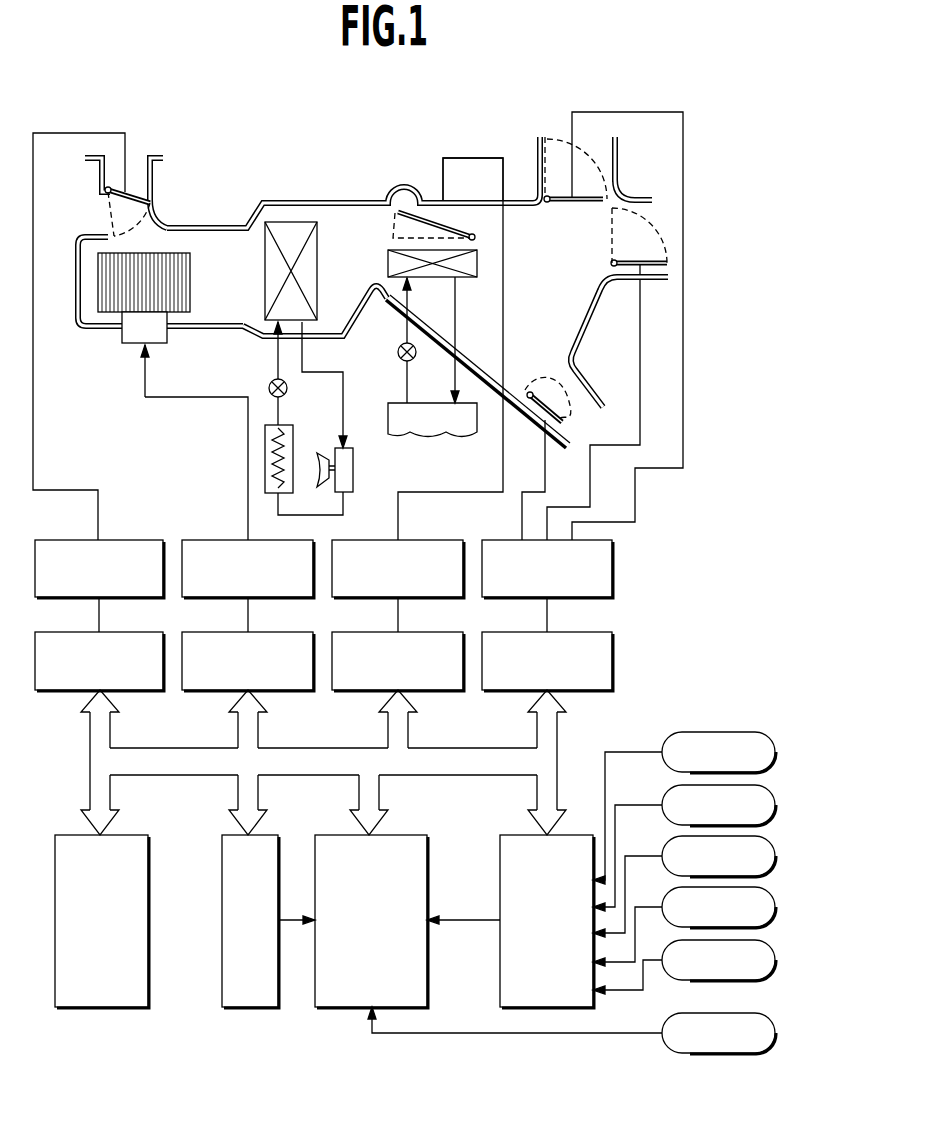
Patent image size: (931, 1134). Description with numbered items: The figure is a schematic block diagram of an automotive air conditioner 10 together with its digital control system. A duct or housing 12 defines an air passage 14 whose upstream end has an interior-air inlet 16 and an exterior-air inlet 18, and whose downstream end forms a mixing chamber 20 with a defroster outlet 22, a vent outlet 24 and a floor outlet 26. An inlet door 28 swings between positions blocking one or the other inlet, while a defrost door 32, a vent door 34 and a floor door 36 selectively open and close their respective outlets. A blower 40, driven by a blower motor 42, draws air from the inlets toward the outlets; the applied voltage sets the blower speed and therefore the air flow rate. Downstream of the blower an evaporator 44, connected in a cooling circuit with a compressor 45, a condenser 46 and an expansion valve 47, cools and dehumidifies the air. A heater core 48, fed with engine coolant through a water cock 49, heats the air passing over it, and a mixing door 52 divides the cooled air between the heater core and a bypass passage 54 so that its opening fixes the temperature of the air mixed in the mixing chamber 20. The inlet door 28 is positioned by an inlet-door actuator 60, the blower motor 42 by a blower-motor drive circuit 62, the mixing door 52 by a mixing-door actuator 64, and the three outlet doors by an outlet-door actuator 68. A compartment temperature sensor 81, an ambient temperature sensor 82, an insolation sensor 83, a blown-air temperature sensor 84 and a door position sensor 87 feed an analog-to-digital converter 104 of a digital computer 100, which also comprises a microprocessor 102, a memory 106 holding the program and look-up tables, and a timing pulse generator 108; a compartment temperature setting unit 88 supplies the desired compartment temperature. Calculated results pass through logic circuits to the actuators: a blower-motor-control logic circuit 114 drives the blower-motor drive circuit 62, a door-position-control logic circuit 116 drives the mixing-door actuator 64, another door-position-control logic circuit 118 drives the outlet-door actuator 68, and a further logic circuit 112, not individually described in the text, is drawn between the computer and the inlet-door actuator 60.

The air conditioner 10 is at (379, 155).
The duct or housing 12 is at (337, 199).
The air passage 14 is at (243, 294).
The interior-air inlet 16 is at (137, 168).
The exterior-air inlet 18 is at (108, 228).
The mixing chamber 20 is at (561, 318).
The defroster outlet 22 is at (592, 142).
The vent outlet 24 is at (648, 207).
The floor outlet 26 is at (588, 405).
The inlet door 28 is at (143, 197).
The defrost door 32 is at (563, 207).
The vent door 34 is at (633, 258).
The floor door 36 is at (535, 413).
The blower 40 is at (118, 313).
The blower motor 42 is at (158, 340).
The evaporator 44 is at (318, 241).
The compressor 45 is at (353, 470).
The condenser 46 is at (293, 443).
The expansion valve 47 is at (288, 385).
The heater core 48 is at (388, 265).
The water cock 49 is at (398, 346).
The mixing door 52 is at (433, 212).
The bypass passage 54 is at (470, 225).
The inlet-door actuator 60 is at (152, 597).
The blower-motor drive circuit 62 is at (301, 597).
The mixing-door actuator 64 is at (451, 597).
The outlet-door actuator 68 is at (600, 597).
The compartment temperature sensor 81 is at (662, 763).
The ambient temperature sensor 82 is at (662, 822).
The insolation sensor 83 is at (664, 875).
The blown-air temperature sensor 84 is at (668, 925).
The door position sensor 87 is at (680, 979).
The compartment temperature setting unit 88 is at (678, 1053).
The digital computer 100 is at (311, 1018).
The microprocessor 102 is at (427, 860).
The analog-to-digital converter 104 is at (500, 994).
The memory 106 is at (148, 855).
The timing pulse generator 108 is at (222, 994).
The logic circuit 112 is at (148, 690).
The blower-motor-control logic circuit 114 is at (297, 690).
The door-position-control logic circuit 116 is at (447, 690).
The door-position-control logic circuit 118 is at (597, 690).